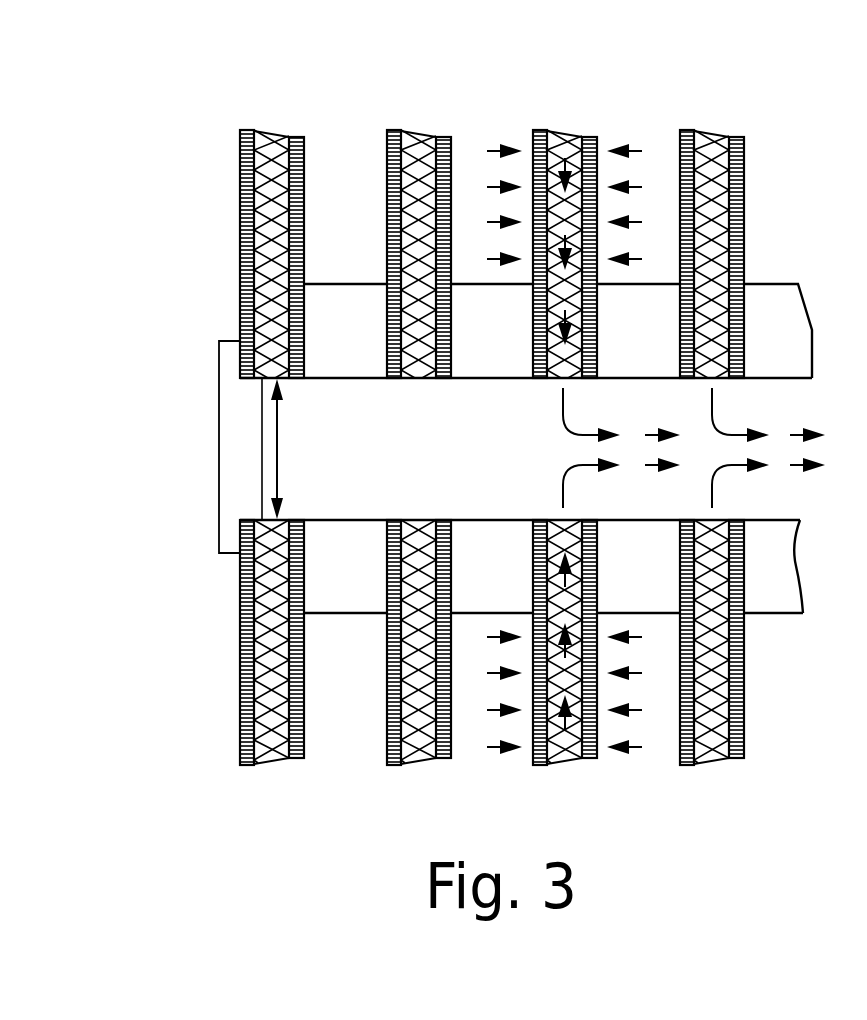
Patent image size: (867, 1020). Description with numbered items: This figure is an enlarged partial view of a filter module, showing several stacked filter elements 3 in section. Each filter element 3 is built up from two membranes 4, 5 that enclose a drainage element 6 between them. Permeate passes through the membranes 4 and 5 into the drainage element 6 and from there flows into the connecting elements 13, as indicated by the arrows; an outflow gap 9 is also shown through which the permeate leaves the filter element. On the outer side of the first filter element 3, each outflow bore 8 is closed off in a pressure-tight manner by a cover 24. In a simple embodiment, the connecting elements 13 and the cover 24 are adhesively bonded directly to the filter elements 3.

The filter element 3 is at (533, 120).
The membrane 4 is at (243, 173).
The membrane 5 is at (305, 167).
The drainage element 6 is at (266, 135).
The outflow bore 8 is at (276, 448).
The outflow gap 9 is at (417, 380).
The connecting element 13 is at (345, 570).
The cover 24 is at (232, 427).